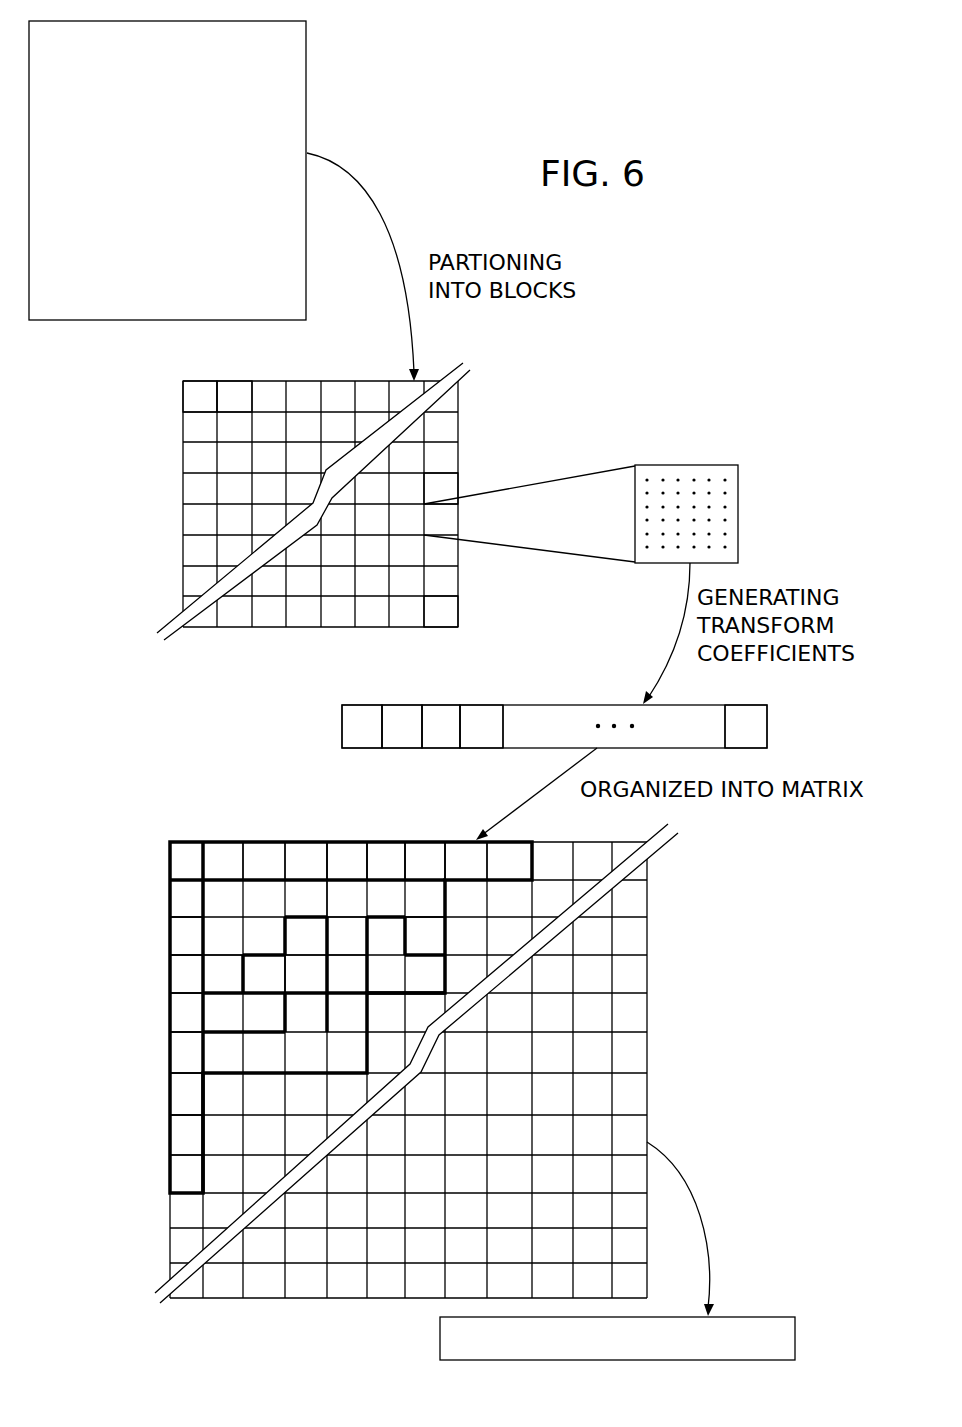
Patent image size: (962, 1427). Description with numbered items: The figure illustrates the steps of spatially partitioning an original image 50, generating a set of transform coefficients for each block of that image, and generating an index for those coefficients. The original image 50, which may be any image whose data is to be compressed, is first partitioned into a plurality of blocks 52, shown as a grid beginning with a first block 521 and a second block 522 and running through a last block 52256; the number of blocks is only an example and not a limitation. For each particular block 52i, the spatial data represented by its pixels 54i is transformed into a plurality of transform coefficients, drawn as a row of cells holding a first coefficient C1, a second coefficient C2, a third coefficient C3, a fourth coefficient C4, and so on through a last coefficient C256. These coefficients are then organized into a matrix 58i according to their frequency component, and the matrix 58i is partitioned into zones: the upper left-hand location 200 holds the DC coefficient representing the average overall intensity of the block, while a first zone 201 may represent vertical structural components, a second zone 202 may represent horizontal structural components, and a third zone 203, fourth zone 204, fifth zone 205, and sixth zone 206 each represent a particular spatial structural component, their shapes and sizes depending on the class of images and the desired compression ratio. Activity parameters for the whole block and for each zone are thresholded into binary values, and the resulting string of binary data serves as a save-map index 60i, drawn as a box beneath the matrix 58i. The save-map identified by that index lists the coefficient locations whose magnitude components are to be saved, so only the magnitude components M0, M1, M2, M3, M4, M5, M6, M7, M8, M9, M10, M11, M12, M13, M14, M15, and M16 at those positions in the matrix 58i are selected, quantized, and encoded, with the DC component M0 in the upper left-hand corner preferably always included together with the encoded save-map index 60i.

The original image 50 is at (306, 108).
The blocks 52 is at (354, 484).
The first block 521 is at (190, 392).
The second block 522 is at (233, 390).
The particular block 52i is at (446, 488).
The last block 52256 is at (447, 608).
The pixels 54i is at (727, 489).
The first transform coefficient C1 is at (358, 656).
The second transform coefficient C2 is at (421, 656).
The third transform coefficient C3 is at (477, 656).
The fourth transform coefficient C4 is at (531, 656).
The last transform coefficient C256 is at (768, 728).
The matrix 58i is at (383, 1035).
The upper left-hand location 200 is at (168, 874).
The first zone 201 is at (262, 862).
The second zone 202 is at (168, 932).
The third zone 203 is at (172, 942).
The fourth zone 204 is at (326, 955).
The fifth zone 205 is at (367, 1032).
The sixth zone 206 is at (406, 955).
The DC magnitude component M0 is at (187, 862).
The magnitude component M1 is at (227, 866).
The magnitude component M2 is at (300, 862).
The magnitude component M3 is at (378, 868).
The magnitude component M4 is at (468, 865).
The magnitude component M5 is at (187, 902).
The magnitude component M6 is at (187, 947).
The magnitude component M7 is at (344, 893).
The magnitude component M8 is at (406, 872).
The magnitude component M9 is at (184, 946).
The magnitude component M10 is at (406, 936).
The magnitude component M11 is at (264, 974).
The magnitude component M12 is at (347, 974).
The magnitude component M13 is at (217, 1008).
The magnitude component M14 is at (263, 1055).
The magnitude component M15 is at (263, 1097).
The magnitude component M16 is at (158, 1160).
The save-map index 60i is at (795, 1335).